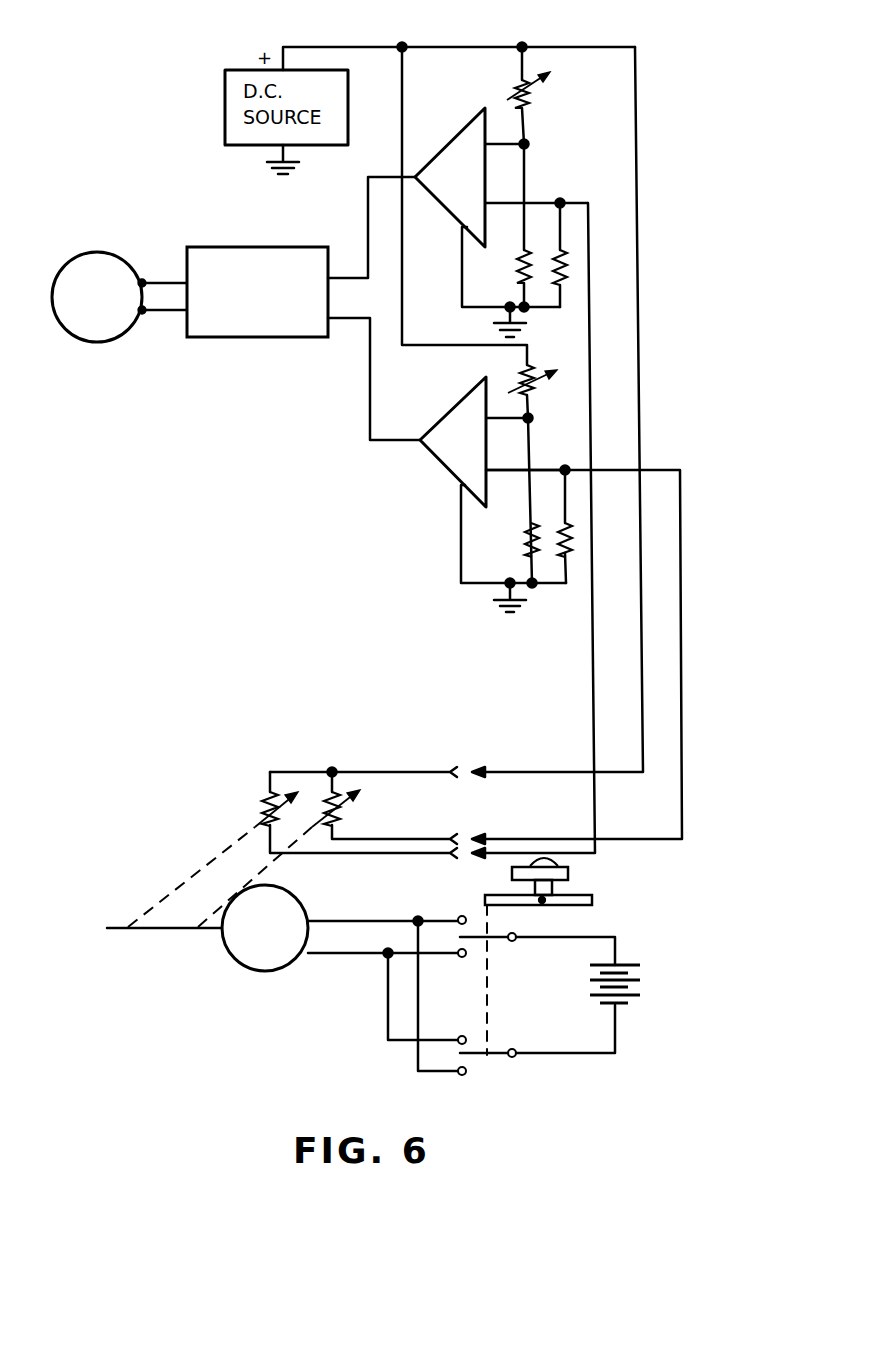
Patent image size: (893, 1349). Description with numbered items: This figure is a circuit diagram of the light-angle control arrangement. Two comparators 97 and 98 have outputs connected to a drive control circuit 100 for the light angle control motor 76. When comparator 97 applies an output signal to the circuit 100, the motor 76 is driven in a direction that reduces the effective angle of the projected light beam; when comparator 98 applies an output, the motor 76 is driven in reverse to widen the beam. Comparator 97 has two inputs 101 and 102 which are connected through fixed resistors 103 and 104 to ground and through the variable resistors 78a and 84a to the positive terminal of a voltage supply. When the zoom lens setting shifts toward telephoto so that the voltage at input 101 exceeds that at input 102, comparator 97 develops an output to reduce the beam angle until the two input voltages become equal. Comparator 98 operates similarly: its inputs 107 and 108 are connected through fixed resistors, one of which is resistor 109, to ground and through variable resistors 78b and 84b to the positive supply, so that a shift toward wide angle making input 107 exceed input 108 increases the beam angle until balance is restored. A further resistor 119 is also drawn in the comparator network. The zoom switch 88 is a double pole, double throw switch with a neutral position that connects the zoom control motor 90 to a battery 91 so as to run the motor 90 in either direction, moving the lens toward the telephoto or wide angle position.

The comparator 97 is at (463, 128).
The input 101 is at (500, 144).
The variable resistor 78a is at (536, 92).
The input 102 is at (505, 203).
The fixed resistor 103 is at (530, 252).
The fixed resistor 104 is at (566, 268).
The variable resistor 78b is at (530, 366).
The input 107 is at (512, 414).
The comparator 98 is at (440, 460).
The input 108 is at (513, 478).
The fixed resistor 109 is at (523, 537).
The resistor 119 is at (572, 550).
The variable resistor 84a is at (264, 800).
The variable resistor 84b is at (333, 794).
The control motor 76 is at (93, 258).
The drive control circuit 100 is at (232, 337).
The zoom control motor 90 is at (253, 963).
The zoom switch 88 is at (613, 900).
The battery 91 is at (640, 965).